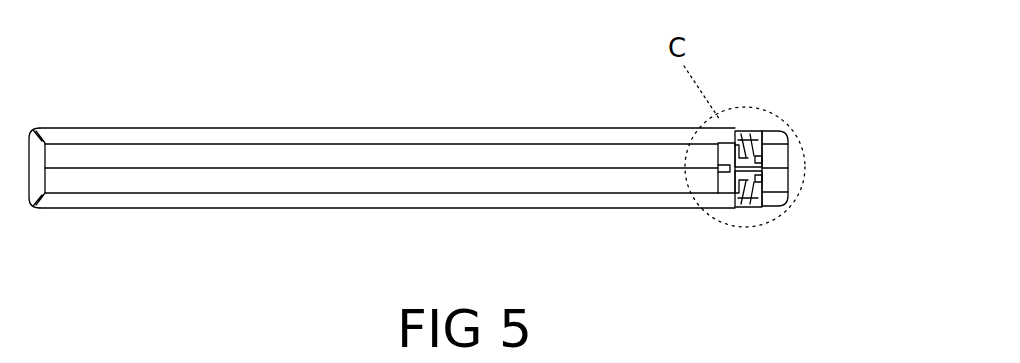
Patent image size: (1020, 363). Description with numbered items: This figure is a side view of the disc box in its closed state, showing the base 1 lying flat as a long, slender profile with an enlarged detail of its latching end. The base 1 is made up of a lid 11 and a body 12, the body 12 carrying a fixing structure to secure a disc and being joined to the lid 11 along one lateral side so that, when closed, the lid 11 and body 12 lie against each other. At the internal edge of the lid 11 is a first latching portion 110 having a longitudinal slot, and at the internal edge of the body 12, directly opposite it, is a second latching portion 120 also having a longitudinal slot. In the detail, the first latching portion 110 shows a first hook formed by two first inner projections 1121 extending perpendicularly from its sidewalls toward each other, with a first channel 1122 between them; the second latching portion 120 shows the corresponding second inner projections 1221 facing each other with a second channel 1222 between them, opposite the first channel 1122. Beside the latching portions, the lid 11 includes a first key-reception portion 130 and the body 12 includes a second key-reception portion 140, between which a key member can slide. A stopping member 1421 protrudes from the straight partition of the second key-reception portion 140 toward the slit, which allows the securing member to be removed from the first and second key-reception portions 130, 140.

The base 1 is at (92, 126).
The lid 11 is at (330, 137).
The body 12 is at (327, 197).
The first latching portion 110 is at (785, 146).
The second latching portion 120 is at (784, 198).
The first key-reception portion 130 is at (735, 140).
The second key-reception portion 140 is at (726, 186).
The first inner projection 1121 is at (744, 148).
The first channel 1122 is at (751, 146).
The second inner projection 1221 is at (762, 183).
The second channel 1222 is at (753, 185).
The stopping member 1421 is at (718, 169).